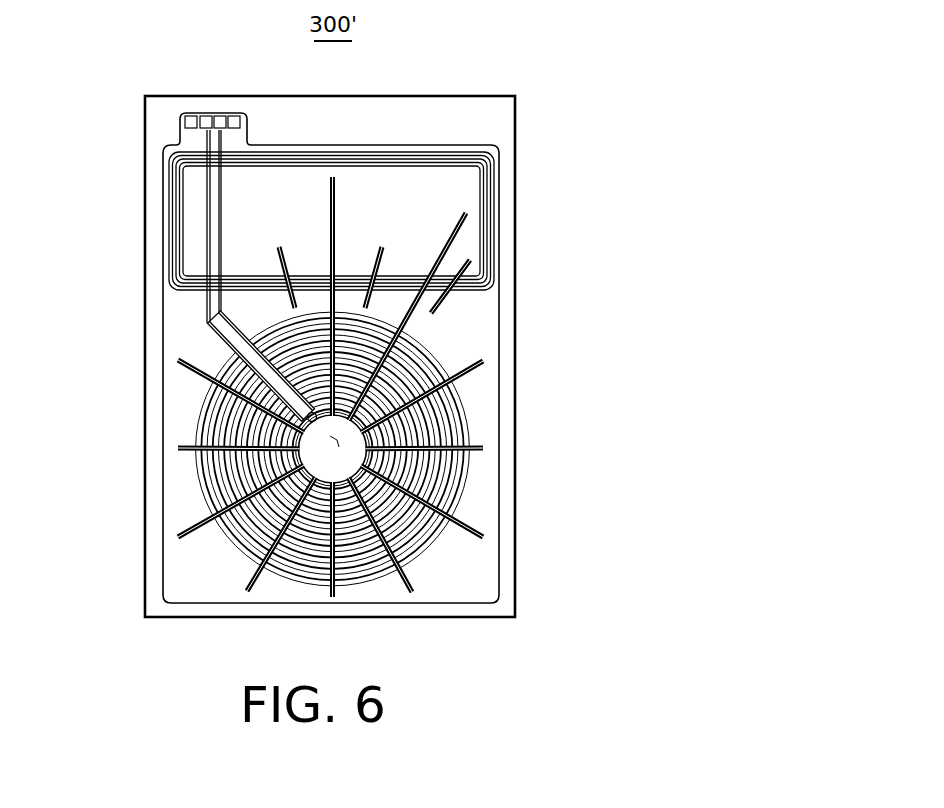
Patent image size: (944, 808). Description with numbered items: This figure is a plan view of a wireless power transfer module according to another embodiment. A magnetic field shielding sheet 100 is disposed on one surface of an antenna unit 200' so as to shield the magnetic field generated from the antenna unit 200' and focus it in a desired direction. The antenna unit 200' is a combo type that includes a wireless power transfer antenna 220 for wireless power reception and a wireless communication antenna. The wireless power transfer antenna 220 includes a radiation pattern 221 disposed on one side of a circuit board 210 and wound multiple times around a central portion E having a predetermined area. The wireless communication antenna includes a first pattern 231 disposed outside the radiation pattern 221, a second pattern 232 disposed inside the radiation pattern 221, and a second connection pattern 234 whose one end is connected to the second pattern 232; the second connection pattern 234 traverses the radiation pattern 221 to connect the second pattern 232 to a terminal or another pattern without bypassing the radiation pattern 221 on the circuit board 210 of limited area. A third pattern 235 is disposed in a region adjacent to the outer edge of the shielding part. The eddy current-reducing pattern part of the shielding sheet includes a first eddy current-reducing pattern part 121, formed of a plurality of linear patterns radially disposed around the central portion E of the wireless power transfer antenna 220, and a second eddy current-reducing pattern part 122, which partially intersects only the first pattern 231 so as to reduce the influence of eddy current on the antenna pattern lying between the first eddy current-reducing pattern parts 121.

The magnetic field shielding sheet 100 is at (520, 137).
The antenna unit 200' is at (403, 167).
The circuit board 210 is at (500, 560).
The wireless power transfer antenna 220 is at (264, 449).
The radiation pattern 221 is at (233, 472).
The first pattern 231 is at (463, 280).
The second pattern 232 is at (362, 473).
The second connection pattern 234 is at (232, 352).
The third pattern 235 is at (425, 158).
The first eddy current-reducing pattern part 121 is at (457, 236).
The second eddy current-reducing pattern part 122 is at (447, 305).
The central portion E is at (337, 440).